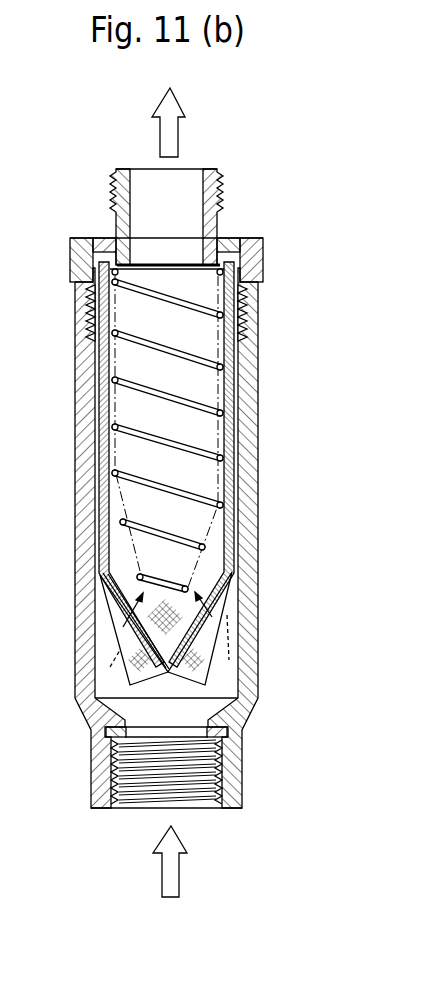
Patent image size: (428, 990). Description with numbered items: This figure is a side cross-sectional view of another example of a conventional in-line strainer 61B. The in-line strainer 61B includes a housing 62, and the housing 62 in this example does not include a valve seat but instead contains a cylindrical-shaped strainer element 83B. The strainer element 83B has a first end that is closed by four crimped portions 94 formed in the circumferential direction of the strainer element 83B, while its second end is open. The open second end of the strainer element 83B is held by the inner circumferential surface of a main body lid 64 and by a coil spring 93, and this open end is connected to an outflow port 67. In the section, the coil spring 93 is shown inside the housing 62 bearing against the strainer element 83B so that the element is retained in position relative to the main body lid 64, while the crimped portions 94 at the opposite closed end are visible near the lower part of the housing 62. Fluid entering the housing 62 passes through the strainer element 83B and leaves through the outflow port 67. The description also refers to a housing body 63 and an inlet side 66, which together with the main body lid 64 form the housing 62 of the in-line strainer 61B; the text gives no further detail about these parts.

The in-line strainer 61B is at (65, 188).
The housing 62 is at (340, 262).
The housing body 63 is at (258, 380).
The main body lid 64 is at (263, 266).
The inlet port 66 is at (196, 814).
The outflow port 67 is at (190, 178).
The strainer element 83B is at (235, 514).
The coil spring 93 is at (232, 420).
The crimped portions 94 is at (195, 682).